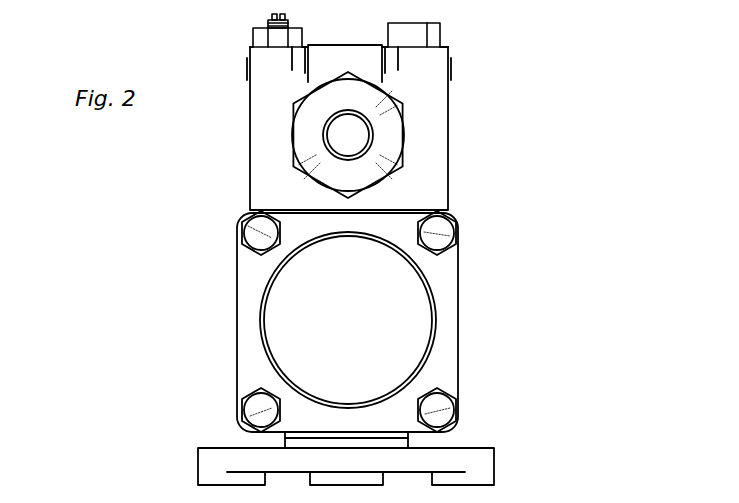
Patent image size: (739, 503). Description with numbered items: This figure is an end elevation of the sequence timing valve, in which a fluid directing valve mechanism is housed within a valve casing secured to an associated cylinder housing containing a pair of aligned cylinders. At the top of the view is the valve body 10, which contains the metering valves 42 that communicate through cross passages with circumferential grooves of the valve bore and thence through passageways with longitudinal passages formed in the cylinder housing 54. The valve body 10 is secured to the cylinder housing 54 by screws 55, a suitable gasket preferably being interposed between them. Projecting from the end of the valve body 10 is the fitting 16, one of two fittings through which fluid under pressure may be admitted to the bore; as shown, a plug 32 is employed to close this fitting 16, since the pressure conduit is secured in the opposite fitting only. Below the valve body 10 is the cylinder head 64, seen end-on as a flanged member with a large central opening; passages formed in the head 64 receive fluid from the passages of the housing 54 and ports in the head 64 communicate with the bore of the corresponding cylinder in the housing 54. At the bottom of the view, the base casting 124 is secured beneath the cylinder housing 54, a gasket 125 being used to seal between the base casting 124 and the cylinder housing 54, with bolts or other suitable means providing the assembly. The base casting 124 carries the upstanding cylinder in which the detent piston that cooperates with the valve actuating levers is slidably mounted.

The valve body 10 is at (457, 136).
The metering valve 42 is at (268, 25).
The screw 55 is at (393, 32).
The fitting 16 is at (398, 101).
The plug 32 is at (338, 146).
The cylinder housing 54 is at (470, 256).
The cylinder head 64 is at (452, 313).
The gasket 125 is at (407, 439).
The base casting 124 is at (494, 471).